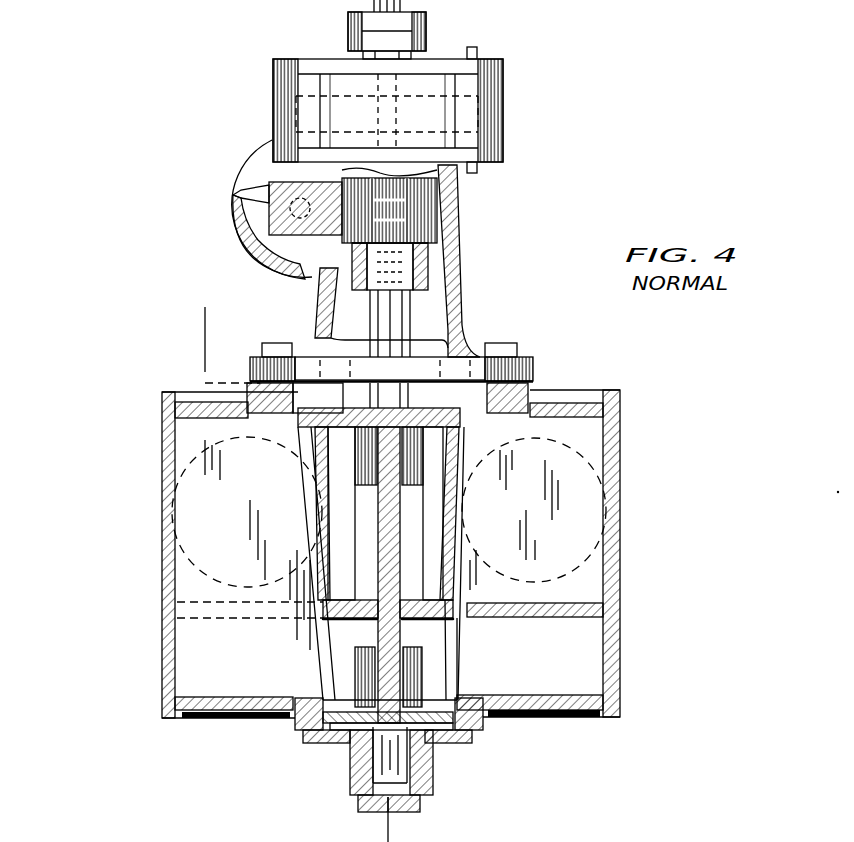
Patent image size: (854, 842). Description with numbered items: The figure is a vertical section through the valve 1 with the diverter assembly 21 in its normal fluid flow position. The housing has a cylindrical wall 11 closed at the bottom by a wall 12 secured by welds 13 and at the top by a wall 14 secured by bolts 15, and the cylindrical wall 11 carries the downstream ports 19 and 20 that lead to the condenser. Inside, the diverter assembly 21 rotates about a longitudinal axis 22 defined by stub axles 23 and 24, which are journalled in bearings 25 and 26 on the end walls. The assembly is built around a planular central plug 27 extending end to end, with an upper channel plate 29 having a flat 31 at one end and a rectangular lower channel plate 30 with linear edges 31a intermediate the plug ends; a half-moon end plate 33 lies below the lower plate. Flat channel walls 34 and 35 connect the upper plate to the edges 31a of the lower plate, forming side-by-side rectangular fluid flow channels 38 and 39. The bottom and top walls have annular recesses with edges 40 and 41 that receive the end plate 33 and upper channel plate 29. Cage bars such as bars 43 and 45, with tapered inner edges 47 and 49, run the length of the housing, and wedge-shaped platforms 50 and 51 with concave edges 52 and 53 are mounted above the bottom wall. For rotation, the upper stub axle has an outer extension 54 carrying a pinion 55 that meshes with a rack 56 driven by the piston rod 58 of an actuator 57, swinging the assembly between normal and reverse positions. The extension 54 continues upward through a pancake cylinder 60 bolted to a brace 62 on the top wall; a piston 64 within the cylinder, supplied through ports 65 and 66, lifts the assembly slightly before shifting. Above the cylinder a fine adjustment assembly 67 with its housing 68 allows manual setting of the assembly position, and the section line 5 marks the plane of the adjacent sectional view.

The valve 1 is at (666, 485).
The section line 5 is at (205, 328).
The cylindrical wall 11 is at (620, 575).
The wall 12 is at (583, 718).
The welds 13 is at (183, 697).
The wall 14 is at (604, 392).
The bolts 15 is at (276, 345).
The downstream port 19 is at (600, 532).
The downstream port 20 is at (160, 560).
The diverter assembly 21 is at (462, 490).
The longitudinal axis 22 is at (413, 841).
The stub axle 23 is at (440, 668).
The stub axle 24 is at (401, 318).
The bearing 25 is at (432, 780).
The bearing 26 is at (452, 355).
The central plug 27 is at (373, 575).
The upper channel plate 29 is at (443, 407).
The lower channel plate 30 is at (425, 597).
The flat 31 is at (463, 415).
The opposed edges 31a is at (320, 608).
The end plate 33 is at (335, 710).
The channel wall 34 is at (455, 530).
The channel wall 35 is at (338, 510).
The fluid flow channel 38 is at (440, 553).
The fluid flow channel 39 is at (340, 560).
The edge 40 is at (452, 700).
The edge 41 is at (303, 360).
The cage bar 43 is at (585, 443).
The cage bar 45 is at (190, 583).
The tapered inner edge 47 is at (468, 512).
The tapered inner edge 49 is at (310, 465).
The platform 50 is at (585, 617).
The platform 51 is at (178, 630).
The concave edge 52 is at (423, 670).
The concave edge 53 is at (310, 572).
The outer extension 54 is at (447, 222).
The pinion 55 is at (420, 232).
The rack 56 is at (267, 202).
The actuator 57 is at (222, 215).
The piston rod 58 is at (262, 173).
The pancake cylinder 60 is at (272, 73).
The brace 62 is at (457, 200).
The piston 64 is at (505, 106).
The port 65 is at (479, 165).
The port 66 is at (472, 48).
The fine adjustment assembly 67 is at (345, 18).
The housing 68 is at (425, 25).